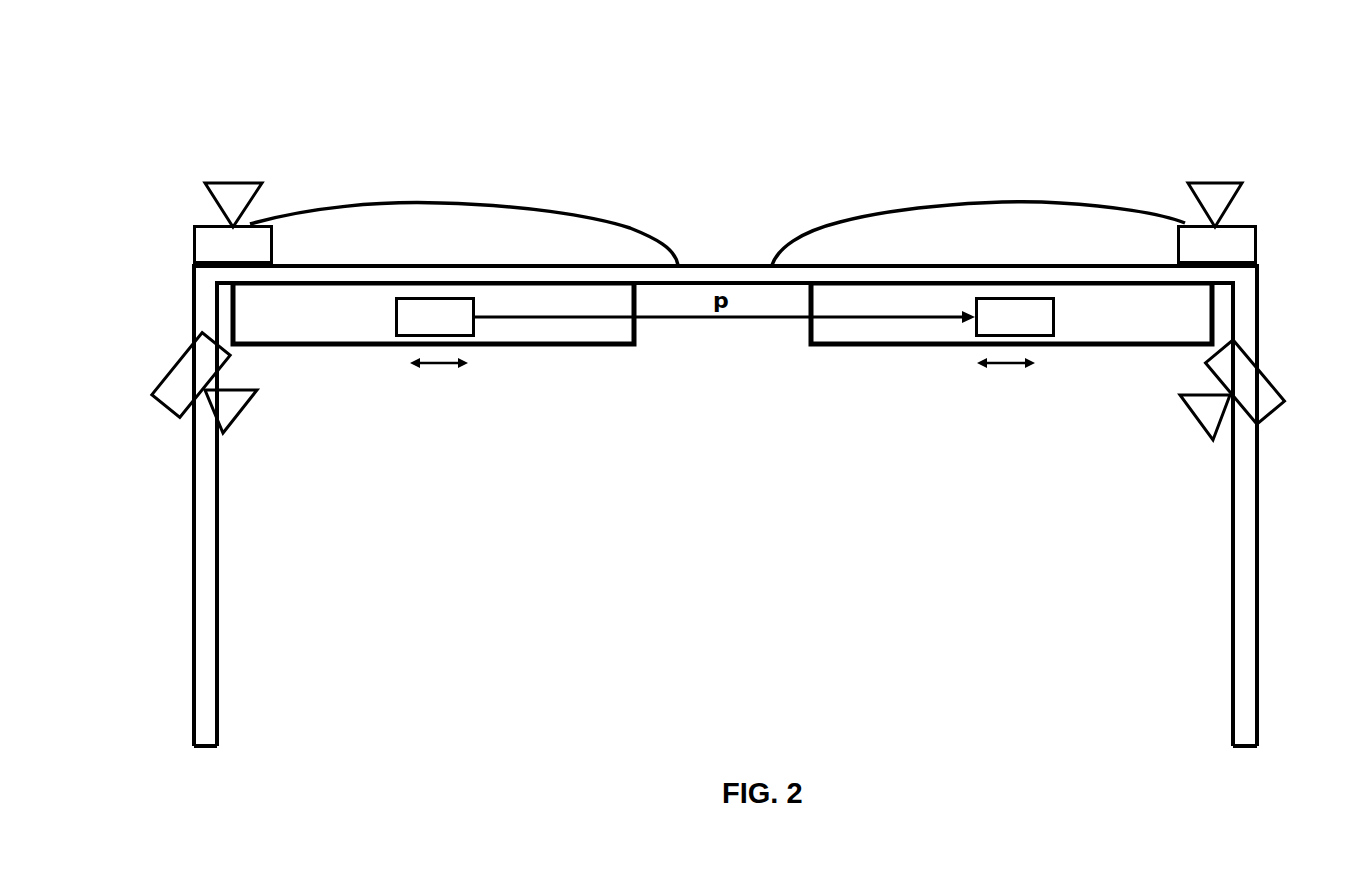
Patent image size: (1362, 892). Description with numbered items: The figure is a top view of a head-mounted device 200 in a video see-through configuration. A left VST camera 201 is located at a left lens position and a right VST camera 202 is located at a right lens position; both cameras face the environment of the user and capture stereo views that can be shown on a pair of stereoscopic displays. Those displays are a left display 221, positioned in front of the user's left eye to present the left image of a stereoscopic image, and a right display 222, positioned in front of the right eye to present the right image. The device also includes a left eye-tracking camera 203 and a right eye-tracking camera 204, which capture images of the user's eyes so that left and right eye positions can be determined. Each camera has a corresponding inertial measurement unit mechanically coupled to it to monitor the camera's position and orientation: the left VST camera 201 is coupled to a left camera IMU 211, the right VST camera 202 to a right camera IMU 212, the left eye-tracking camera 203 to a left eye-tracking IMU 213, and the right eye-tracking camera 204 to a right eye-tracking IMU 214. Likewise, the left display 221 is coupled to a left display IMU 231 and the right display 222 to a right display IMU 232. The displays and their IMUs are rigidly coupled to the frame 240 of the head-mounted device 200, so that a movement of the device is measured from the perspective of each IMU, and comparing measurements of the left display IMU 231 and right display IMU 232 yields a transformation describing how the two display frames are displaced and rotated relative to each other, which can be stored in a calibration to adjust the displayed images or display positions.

The head-mounted device 200 is at (190, 107).
The left VST camera 201 is at (206, 193).
The right VST camera 202 is at (1243, 191).
The left eye-tracking camera 203 is at (238, 413).
The right eye-tracking camera 204 is at (1195, 416).
The left camera IMU 211 is at (193, 248).
The right camera IMU 212 is at (1257, 248).
The left eye-tracking IMU 213 is at (165, 388).
The right eye-tracking IMU 214 is at (1272, 397).
The left display 221 is at (378, 348).
The right display 222 is at (893, 348).
The left display IMU 231 is at (395, 317).
The right display IMU 232 is at (1057, 317).
The frame 240 is at (729, 263).